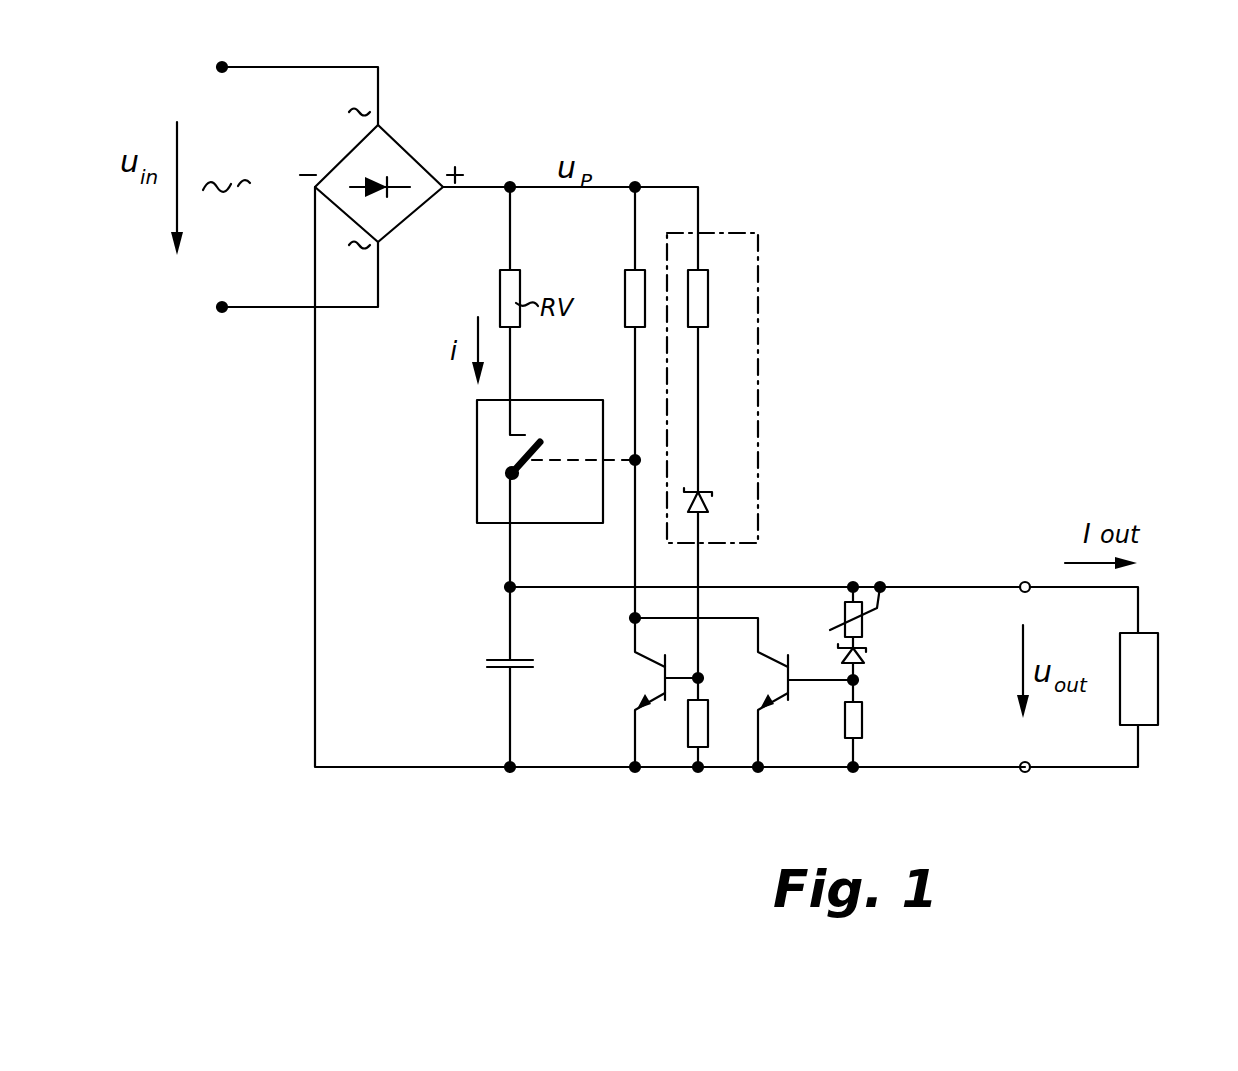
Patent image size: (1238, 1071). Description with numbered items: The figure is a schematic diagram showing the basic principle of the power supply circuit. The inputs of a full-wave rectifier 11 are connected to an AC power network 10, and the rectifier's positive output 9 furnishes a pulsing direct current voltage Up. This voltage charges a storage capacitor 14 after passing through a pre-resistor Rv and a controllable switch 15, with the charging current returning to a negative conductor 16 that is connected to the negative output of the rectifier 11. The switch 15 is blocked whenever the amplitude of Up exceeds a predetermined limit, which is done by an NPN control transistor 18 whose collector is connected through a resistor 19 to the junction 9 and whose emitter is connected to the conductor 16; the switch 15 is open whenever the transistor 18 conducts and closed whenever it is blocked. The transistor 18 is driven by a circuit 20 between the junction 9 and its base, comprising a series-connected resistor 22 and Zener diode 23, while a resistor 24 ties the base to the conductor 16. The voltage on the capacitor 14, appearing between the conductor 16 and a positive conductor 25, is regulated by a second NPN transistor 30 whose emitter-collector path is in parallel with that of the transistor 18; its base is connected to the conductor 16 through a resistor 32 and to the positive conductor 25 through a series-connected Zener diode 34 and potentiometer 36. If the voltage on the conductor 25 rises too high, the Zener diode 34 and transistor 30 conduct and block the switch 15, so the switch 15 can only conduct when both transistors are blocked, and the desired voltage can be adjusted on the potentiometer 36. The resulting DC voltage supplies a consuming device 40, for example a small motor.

The positive output 9 is at (510, 185).
The AC power network 10 is at (215, 67).
The full-wave rectifier 11 is at (343, 157).
The storage capacitor 14 is at (481, 664).
The controllable switch 15 is at (477, 458).
The negative conductor 16 is at (437, 770).
The control transistor 18 is at (652, 668).
The resistor 19 is at (625, 290).
The circuit 20 is at (762, 360).
The resistor 22 is at (700, 302).
The Zener diode 23 is at (710, 505).
The resistor 24 is at (708, 712).
The positive conductor 25 is at (958, 585).
The second NPN transistor 30 is at (790, 690).
The resistor 32 is at (864, 718).
The Zener diode 34 is at (868, 656).
The potentiometer 36 is at (840, 612).
The consuming device 40 is at (1158, 672).